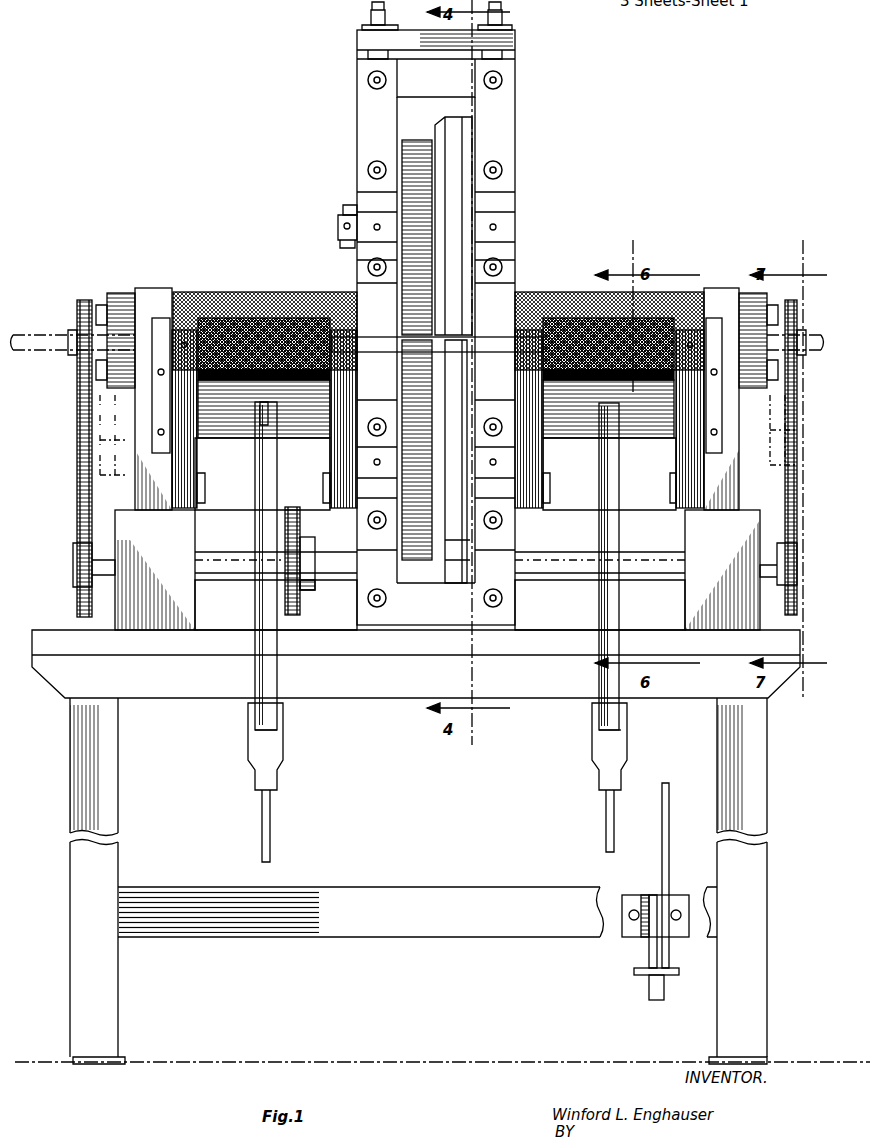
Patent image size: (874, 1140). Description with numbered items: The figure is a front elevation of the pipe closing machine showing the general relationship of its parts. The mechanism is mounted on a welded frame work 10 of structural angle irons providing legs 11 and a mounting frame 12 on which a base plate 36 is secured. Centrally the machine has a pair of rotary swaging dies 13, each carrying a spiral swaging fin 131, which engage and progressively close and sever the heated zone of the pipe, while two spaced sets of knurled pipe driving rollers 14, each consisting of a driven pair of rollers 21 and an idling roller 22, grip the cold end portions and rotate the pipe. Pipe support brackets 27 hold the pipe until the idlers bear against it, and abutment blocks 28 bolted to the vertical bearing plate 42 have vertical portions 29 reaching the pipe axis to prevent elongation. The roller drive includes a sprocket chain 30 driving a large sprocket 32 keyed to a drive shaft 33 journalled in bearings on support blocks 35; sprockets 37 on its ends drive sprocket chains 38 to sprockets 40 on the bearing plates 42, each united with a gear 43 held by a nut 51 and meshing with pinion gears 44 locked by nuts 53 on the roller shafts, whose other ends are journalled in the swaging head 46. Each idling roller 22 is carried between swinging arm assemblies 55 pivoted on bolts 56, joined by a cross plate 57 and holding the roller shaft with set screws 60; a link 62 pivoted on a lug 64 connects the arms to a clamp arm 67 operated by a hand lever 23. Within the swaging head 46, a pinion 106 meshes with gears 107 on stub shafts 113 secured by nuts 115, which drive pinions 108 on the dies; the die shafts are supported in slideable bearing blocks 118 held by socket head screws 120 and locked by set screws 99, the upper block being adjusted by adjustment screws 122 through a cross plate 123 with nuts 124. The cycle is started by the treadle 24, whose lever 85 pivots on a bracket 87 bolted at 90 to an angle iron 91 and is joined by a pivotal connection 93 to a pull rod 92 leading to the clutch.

The frame work 10 is at (68, 936).
The legs 11 is at (105, 997).
The mounting frame 12 is at (182, 685).
The rotary swaging dies 13 is at (452, 175).
The pipe driving rollers 14 is at (270, 320).
The driven rollers 21 is at (212, 292).
The idling roller 22 is at (302, 370).
The hand lever 23 is at (272, 822).
The treadle 24 is at (634, 973).
The pipe support brackets 27 is at (162, 442).
The blocks 28 is at (440, 469).
The vertical portions 29 is at (806, 413).
The sprocket chain 30 is at (301, 523).
The large sprocket 32 is at (306, 592).
The drive shaft 33 is at (222, 556).
The support blocks 35 is at (195, 612).
The base plate 36 is at (338, 638).
The sprockets 37 is at (95, 563).
The sprocket chain 38 is at (78, 498).
The sprocket 40 is at (85, 300).
The vertical bearing plate 42 is at (150, 510).
The gear 43 is at (740, 310).
The pinion gears 44 is at (118, 300).
The swaging head 46 is at (515, 107).
The nut 51 is at (75, 348).
The nuts 53 is at (105, 380).
The swinging arm assemblies 55 is at (330, 462).
The bolts 56 is at (206, 490).
The cross plate 57 is at (575, 430).
The set screws 60 is at (342, 300).
The link 62 is at (255, 670).
The lug 64 is at (264, 410).
The clamp arm 67 is at (283, 720).
The lever 85 is at (657, 1000).
The bracket 87 is at (649, 955).
The bolts 90 is at (634, 910).
The angle iron 91 is at (694, 905).
The pull rod 92 is at (670, 800).
The pivotal connection 93 is at (652, 984).
The set screws 99 is at (497, 227).
The pinion 106 is at (405, 327).
The gears 107 is at (410, 157).
The pinions 108 is at (408, 430).
The stub shafts 113 is at (337, 228).
The nuts 115 is at (347, 208).
The bearing blocks 118 is at (372, 104).
The socket head screws 120 is at (503, 170).
The adjustment screws 122 is at (368, 9).
The cross plate 123 is at (512, 39).
The nuts 124 is at (360, 35).
The swaging fin 131 is at (452, 125).